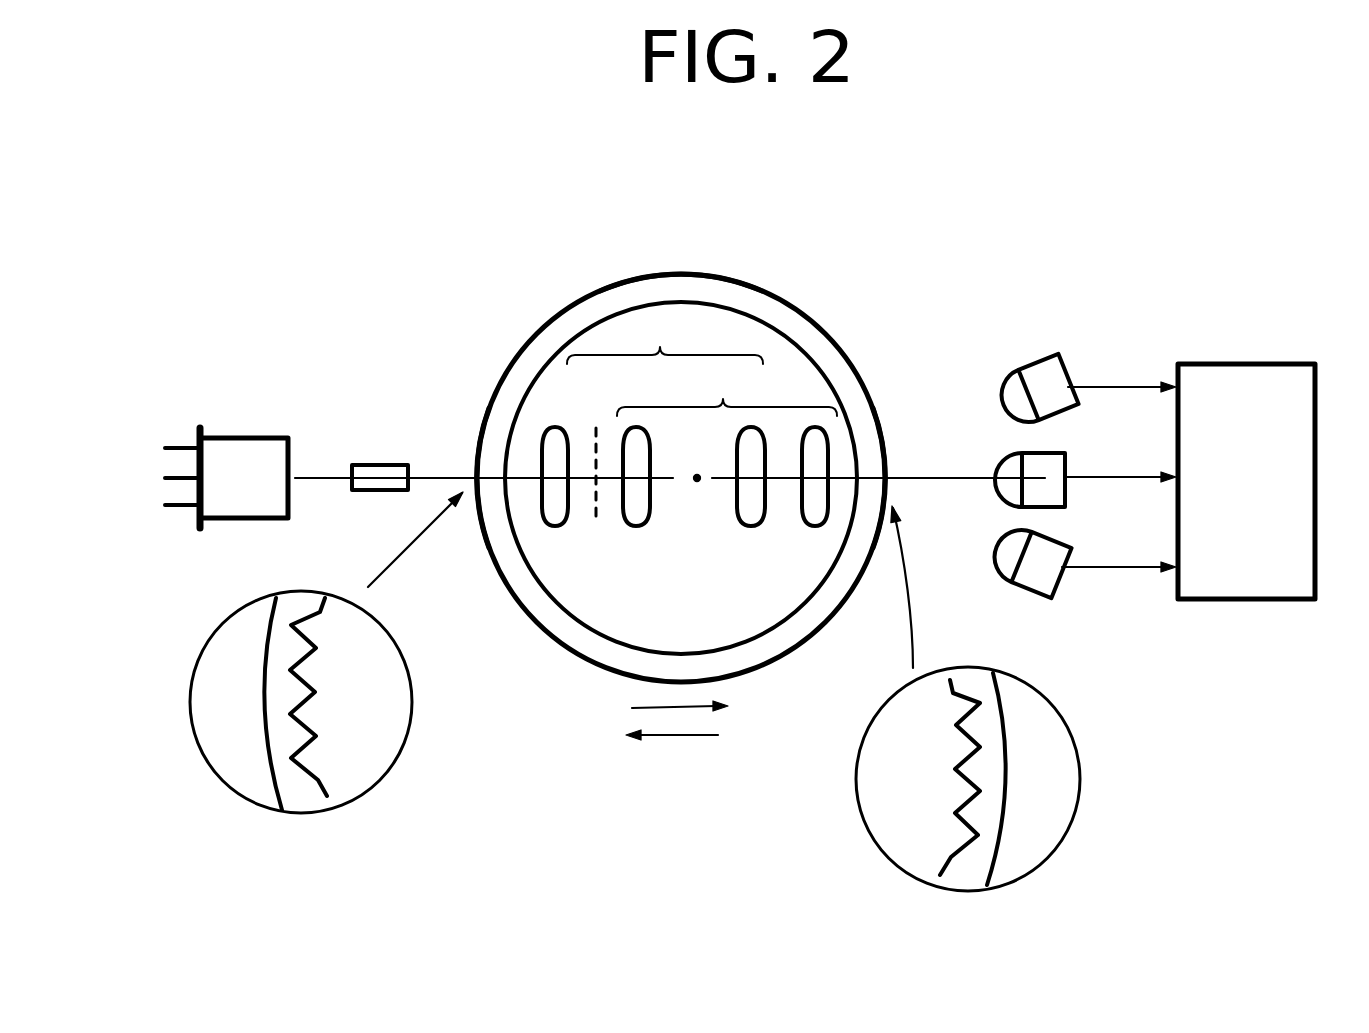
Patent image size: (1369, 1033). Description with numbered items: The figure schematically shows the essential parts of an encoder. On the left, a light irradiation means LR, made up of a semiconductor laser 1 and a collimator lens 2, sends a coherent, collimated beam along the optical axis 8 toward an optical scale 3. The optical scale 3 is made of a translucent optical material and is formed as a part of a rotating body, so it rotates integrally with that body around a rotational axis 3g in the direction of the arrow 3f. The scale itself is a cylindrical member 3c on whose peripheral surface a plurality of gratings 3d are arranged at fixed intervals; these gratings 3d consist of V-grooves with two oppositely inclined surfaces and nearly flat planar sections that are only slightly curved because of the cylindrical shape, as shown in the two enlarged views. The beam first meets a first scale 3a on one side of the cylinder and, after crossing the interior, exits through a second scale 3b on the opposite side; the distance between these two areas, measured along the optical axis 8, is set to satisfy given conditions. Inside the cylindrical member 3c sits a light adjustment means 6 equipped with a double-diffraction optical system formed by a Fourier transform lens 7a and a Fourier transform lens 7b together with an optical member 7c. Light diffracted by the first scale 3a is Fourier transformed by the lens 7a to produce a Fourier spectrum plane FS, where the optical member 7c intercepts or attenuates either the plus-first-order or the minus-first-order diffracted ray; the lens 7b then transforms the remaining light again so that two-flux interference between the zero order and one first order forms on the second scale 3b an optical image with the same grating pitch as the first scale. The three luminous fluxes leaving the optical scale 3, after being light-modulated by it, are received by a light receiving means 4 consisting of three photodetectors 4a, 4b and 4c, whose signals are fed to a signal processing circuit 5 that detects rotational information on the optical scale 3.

The light irradiation means LR is at (447, 256).
The semiconductor laser 1 is at (262, 418).
The collimator lens 2 is at (378, 445).
The optical scale 3 is at (835, 315).
The first scale 3a is at (474, 460).
The second scale 3b is at (880, 447).
The cylindrical member 3c is at (712, 277).
The gratings 3d is at (316, 714).
The arrow 3f is at (652, 708).
The rotational axis 3g is at (697, 483).
The light receiving means 4 is at (1180, 341).
The photodetector 4a is at (1084, 382).
The photodetector 4b is at (1081, 559).
The photodetector 4c is at (1085, 467).
The signal processing circuit 5 is at (1275, 330).
The light adjustment means 6 is at (660, 348).
The Fourier transform lens 7a is at (555, 425).
The Fourier transform lens 7b is at (727, 444).
The optical member 7c is at (599, 425).
The optical axis 8 is at (948, 477).
The Fourier spectrum plane FS is at (595, 524).